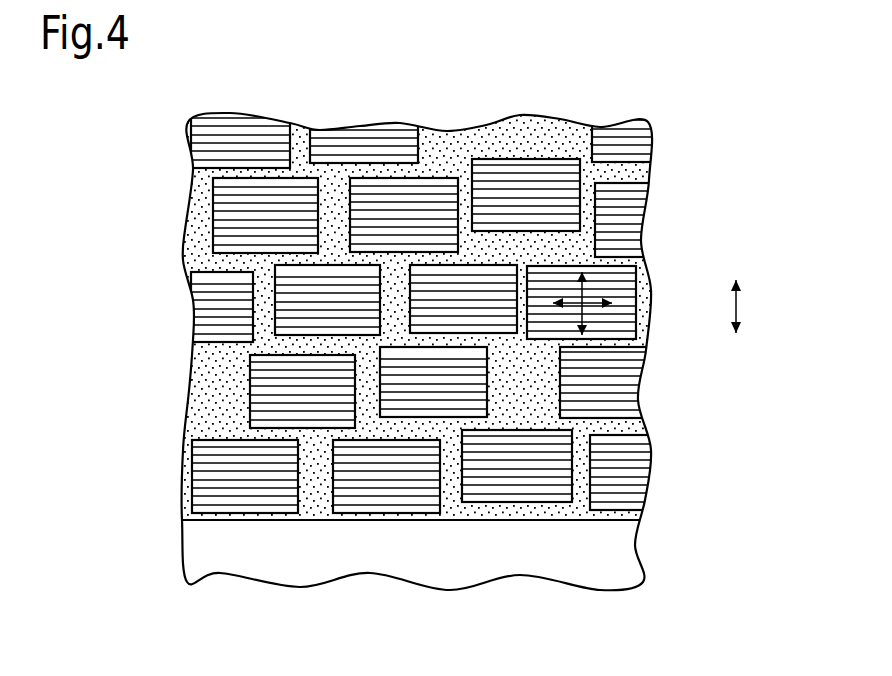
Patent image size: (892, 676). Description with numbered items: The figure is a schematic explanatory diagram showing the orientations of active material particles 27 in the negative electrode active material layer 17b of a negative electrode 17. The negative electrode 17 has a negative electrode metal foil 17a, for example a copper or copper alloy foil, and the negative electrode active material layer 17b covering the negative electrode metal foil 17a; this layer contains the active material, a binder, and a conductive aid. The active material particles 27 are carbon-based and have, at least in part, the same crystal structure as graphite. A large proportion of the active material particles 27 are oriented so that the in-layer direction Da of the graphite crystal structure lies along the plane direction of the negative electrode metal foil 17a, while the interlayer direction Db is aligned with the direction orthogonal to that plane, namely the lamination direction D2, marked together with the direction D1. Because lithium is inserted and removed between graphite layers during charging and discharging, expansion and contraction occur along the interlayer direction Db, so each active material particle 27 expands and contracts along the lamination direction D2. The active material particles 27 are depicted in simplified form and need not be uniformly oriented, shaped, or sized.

The negative electrode 17 is at (472, 328).
The negative electrode metal foil 17a is at (633, 544).
The negative electrode active material layer 17b is at (645, 428).
The active material particles 27 is at (483, 172).
The in-layer direction Da is at (588, 307).
The interlayer direction Db is at (590, 298).
The pitch direction D1 is at (744, 306).
The lamination direction D2 is at (820, 305).